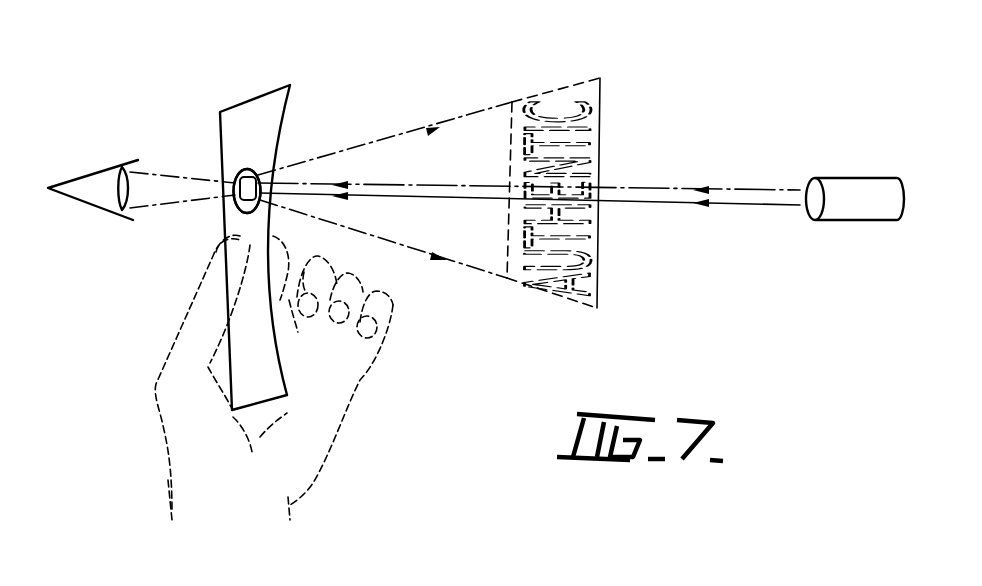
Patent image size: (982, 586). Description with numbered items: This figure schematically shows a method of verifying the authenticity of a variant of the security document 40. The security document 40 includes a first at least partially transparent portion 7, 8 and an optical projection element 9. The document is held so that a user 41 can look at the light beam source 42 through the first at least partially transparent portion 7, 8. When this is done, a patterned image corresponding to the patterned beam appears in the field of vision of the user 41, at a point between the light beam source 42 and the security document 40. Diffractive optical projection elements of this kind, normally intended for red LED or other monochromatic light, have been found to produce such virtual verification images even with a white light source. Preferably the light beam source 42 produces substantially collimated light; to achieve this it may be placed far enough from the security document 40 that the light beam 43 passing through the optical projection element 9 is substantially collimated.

The first at least partially transparent portion 7 is at (245, 168).
The first at least partially transparent portion 8 is at (245, 168).
The optical projection element 9 is at (254, 169).
The security document 40 is at (273, 107).
The user 41 is at (98, 172).
The light beam source 42 is at (837, 190).
The light beam 43 is at (688, 203).